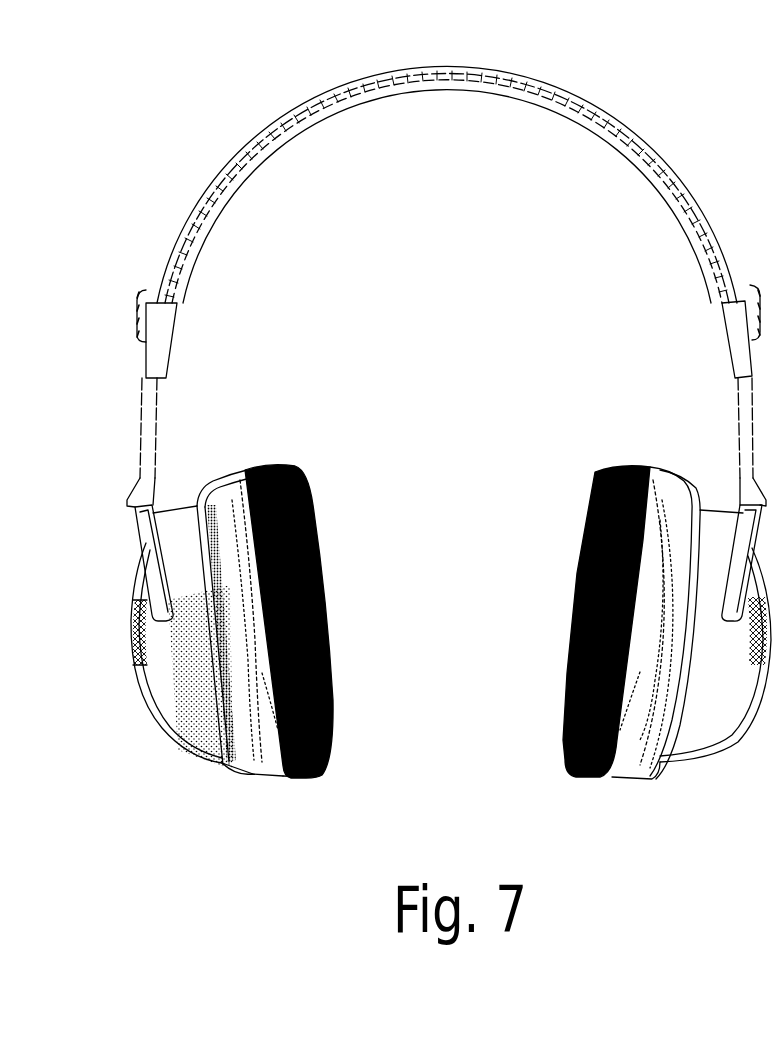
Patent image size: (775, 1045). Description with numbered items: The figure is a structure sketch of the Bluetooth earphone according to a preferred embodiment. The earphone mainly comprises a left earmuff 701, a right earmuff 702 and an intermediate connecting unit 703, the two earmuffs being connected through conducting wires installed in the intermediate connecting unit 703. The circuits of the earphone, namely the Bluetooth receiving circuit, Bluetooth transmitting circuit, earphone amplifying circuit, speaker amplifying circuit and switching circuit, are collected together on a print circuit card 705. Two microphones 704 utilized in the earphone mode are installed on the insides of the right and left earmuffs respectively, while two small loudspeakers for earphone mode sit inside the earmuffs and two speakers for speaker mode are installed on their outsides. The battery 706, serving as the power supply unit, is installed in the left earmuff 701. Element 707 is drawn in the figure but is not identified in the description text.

The left earmuff 701 is at (282, 462).
The right earmuff 702 is at (598, 465).
The intermediate connecting unit 703 is at (282, 135).
The microphones 704 is at (640, 672).
The print circuit card 705 is at (320, 775).
The battery 706 is at (220, 760).
The cup hinge/grip 707 is at (137, 670).